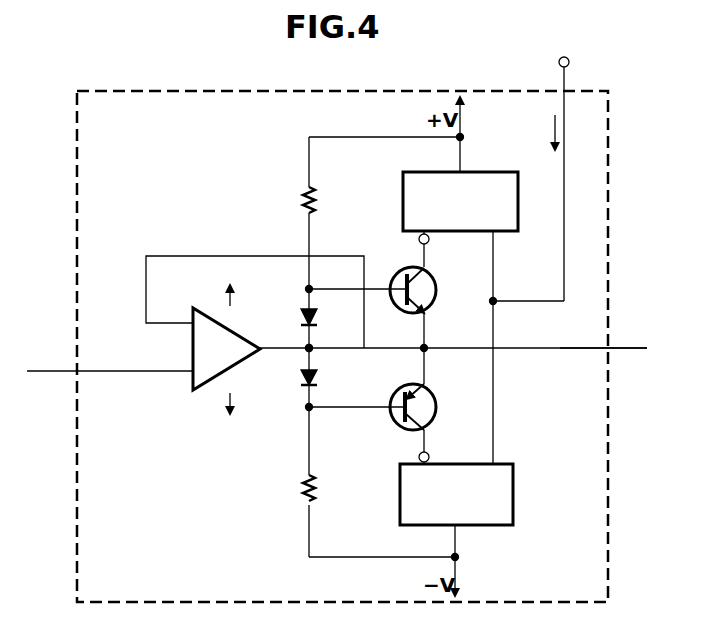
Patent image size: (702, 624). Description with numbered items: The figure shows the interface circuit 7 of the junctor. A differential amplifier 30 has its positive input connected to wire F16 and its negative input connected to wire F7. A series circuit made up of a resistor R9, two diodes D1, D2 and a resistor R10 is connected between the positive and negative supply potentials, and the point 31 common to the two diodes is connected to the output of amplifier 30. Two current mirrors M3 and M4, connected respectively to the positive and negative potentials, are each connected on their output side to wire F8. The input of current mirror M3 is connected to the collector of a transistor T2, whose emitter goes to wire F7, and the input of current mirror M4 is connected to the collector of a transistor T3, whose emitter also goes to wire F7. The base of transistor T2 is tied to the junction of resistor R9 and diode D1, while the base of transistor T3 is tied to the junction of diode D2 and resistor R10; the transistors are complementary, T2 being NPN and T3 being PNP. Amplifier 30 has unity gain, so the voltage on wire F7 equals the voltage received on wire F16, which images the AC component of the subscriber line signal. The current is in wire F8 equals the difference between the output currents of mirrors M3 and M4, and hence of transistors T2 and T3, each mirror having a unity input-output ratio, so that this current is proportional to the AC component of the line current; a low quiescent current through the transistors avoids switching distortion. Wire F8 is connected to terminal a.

The interface circuit 7 is at (104, 128).
The terminal a is at (570, 62).
The current is is at (545, 130).
The differential amplifier 30 is at (215, 348).
The point common to the two diodes 31 is at (312, 350).
The resistor R9 is at (304, 199).
The resistor R10 is at (301, 501).
The diode D1 is at (304, 315).
The diode D2 is at (302, 384).
The transistor T2 is at (436, 300).
The transistor T3 is at (436, 416).
The current mirror M3 is at (410, 190).
The current mirror M4 is at (418, 498).
The wire F7 is at (632, 350).
The wire F8 is at (544, 300).
The wire F16 is at (62, 373).